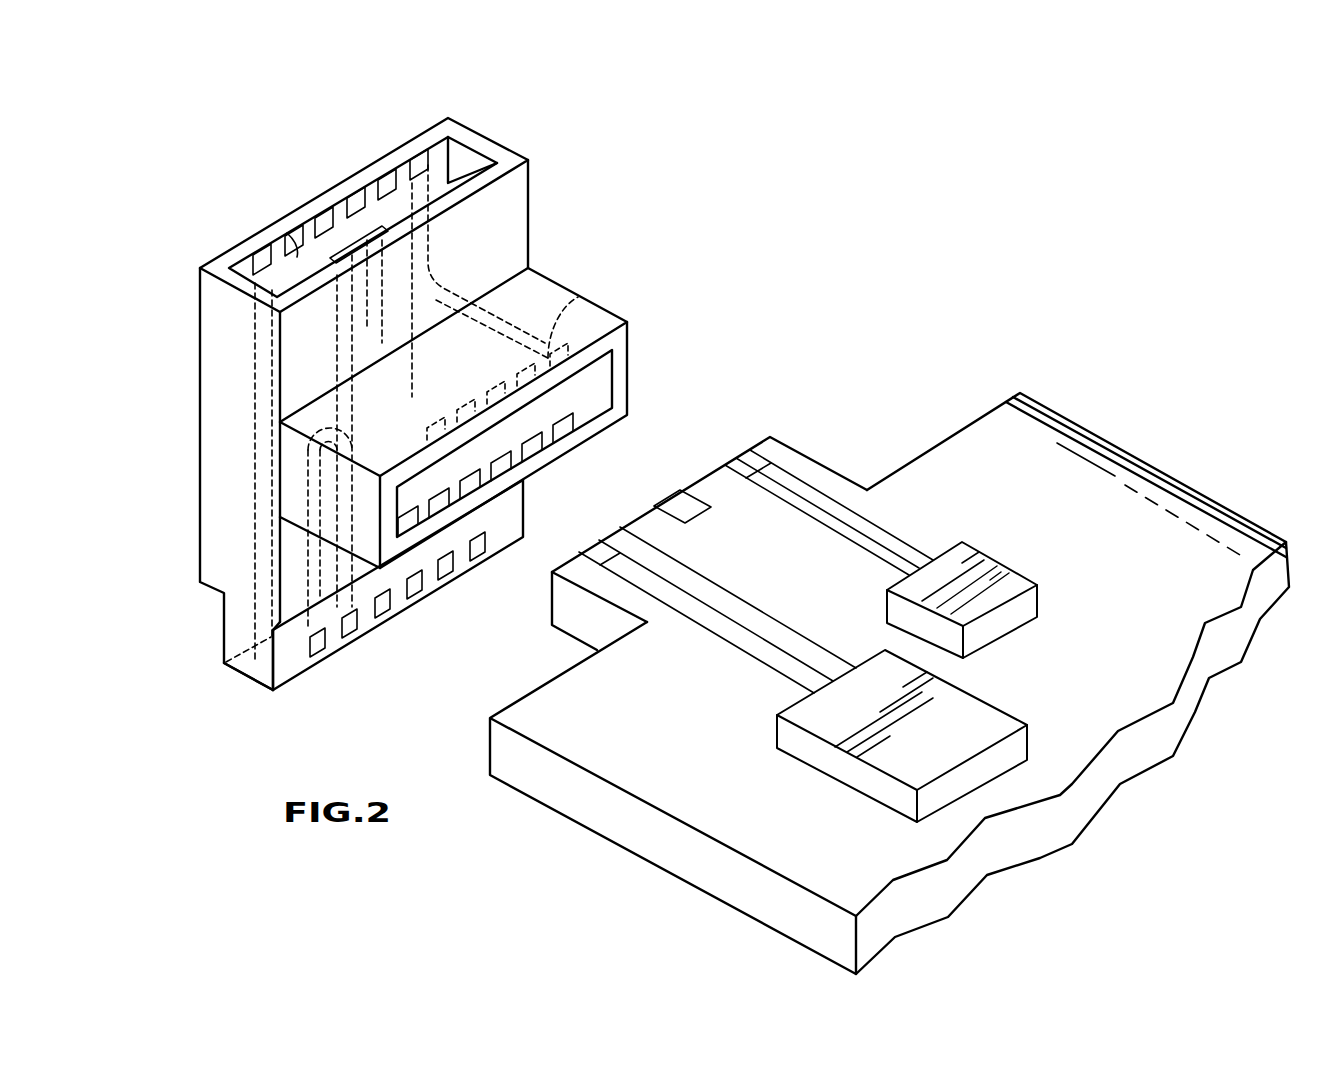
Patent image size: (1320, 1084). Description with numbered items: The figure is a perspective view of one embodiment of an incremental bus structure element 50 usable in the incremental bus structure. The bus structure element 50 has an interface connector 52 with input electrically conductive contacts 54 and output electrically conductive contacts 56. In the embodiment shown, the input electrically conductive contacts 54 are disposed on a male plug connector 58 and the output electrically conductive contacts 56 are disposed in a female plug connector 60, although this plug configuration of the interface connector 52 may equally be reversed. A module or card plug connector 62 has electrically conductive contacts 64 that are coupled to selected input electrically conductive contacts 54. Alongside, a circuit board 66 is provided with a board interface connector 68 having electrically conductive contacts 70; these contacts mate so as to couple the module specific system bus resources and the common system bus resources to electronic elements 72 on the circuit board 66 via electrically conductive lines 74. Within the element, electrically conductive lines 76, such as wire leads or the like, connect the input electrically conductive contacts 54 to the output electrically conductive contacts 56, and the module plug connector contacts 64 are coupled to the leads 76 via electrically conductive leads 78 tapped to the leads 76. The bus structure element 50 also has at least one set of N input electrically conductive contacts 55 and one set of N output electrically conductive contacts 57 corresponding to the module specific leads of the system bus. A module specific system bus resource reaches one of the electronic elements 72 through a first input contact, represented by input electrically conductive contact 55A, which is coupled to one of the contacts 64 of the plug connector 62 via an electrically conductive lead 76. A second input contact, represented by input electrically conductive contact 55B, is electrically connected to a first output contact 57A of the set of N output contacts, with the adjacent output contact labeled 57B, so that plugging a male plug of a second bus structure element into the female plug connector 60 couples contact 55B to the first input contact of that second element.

The incremental bus structure element 50 is at (624, 193).
The interface connector 52 is at (530, 180).
The input electrically conductive contacts 54 is at (453, 578).
The set of N input electrically conductive contacts 55 is at (343, 662).
The input electrically conductive contact 55A is at (310, 655).
The input electrically conductive contact 55B is at (364, 628).
The output electrically conductive contacts 56 is at (388, 173).
The set of N output electrically conductive contacts 57 is at (353, 213).
The first output contact 57A is at (292, 233).
The contact lower portion 57B is at (398, 236).
The male plug connector 58 is at (252, 681).
The female plug connector 60 is at (470, 150).
The module or card plug connector 62 is at (628, 350).
The electrically conductive contacts 64 is at (520, 372).
The circuit board 66 is at (552, 677).
The board interface connector 68 is at (800, 452).
The electrically conductive contacts 70 is at (713, 478).
The electronic elements 72 is at (1027, 576).
The electrically conductive lines 74 is at (905, 535).
The electrically conductive lines 76 is at (254, 373).
The electrically conductive leads 78 is at (583, 294).